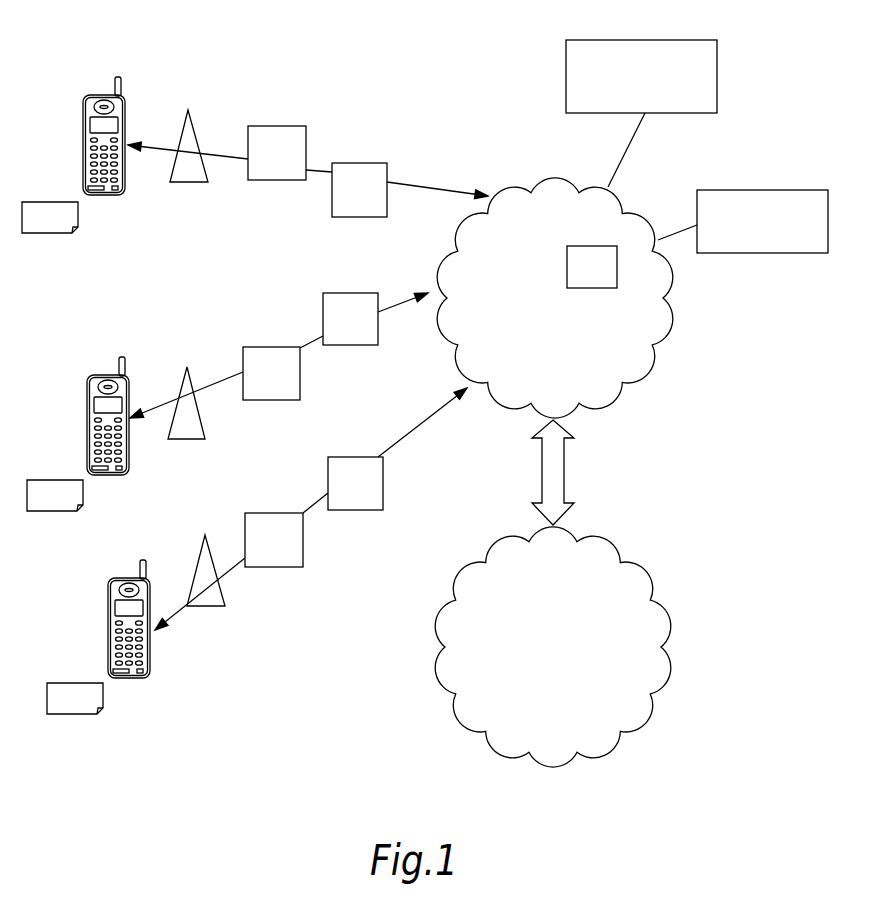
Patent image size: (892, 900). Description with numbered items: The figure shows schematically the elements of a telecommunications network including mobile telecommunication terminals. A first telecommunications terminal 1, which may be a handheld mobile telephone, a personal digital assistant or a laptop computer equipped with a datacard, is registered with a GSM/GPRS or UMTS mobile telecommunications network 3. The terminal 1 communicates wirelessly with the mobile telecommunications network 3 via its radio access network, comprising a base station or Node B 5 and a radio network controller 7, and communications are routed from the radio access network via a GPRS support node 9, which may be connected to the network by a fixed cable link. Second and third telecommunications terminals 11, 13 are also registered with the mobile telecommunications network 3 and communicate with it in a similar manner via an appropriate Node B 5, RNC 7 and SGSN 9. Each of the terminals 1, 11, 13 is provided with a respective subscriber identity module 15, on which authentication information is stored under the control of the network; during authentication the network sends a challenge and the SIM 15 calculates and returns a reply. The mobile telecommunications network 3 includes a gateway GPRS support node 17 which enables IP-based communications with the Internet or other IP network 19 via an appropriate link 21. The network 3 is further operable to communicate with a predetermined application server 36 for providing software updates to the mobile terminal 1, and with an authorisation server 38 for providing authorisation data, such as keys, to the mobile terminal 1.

The first telecommunications terminal 1 is at (83, 128).
The second telecommunications terminal 11 is at (87, 407).
The third telecommunications terminal 13 is at (108, 625).
The subscriber identity module 15 is at (50, 228).
The base station (Node B) 5 is at (190, 183).
The radio network controller 7 is at (270, 180).
The GPRS support node 9 is at (355, 217).
The mobile telecommunications network 3 is at (663, 345).
The gateway GPRS support node 17 is at (597, 288).
The Internet or other IP network 19 is at (657, 590).
The link 21 is at (566, 472).
The application server 36 is at (718, 67).
The authorisation server 38 is at (762, 253).